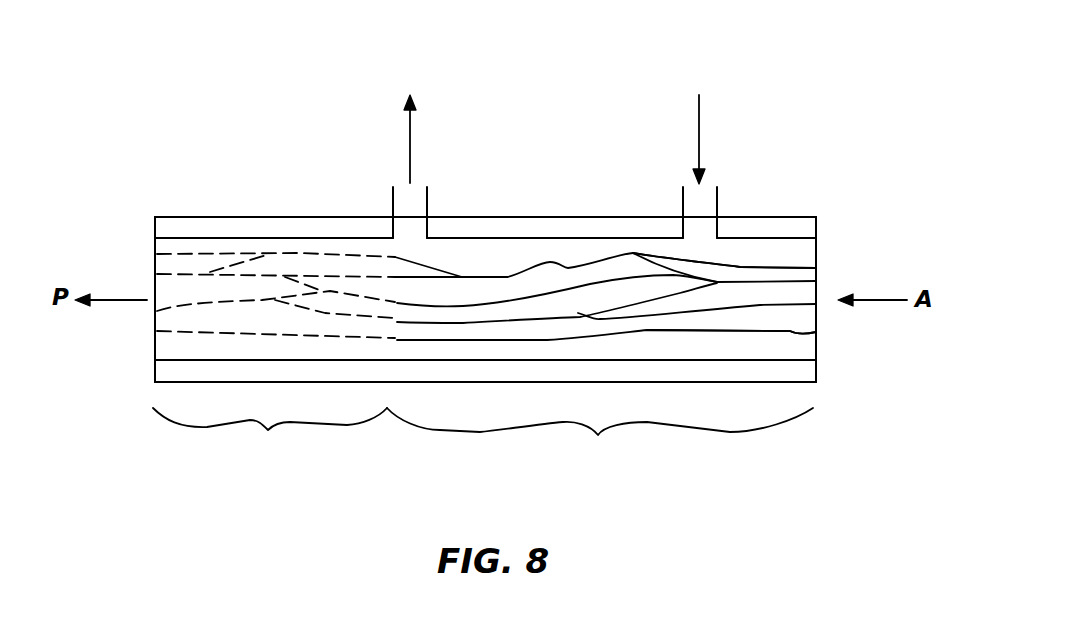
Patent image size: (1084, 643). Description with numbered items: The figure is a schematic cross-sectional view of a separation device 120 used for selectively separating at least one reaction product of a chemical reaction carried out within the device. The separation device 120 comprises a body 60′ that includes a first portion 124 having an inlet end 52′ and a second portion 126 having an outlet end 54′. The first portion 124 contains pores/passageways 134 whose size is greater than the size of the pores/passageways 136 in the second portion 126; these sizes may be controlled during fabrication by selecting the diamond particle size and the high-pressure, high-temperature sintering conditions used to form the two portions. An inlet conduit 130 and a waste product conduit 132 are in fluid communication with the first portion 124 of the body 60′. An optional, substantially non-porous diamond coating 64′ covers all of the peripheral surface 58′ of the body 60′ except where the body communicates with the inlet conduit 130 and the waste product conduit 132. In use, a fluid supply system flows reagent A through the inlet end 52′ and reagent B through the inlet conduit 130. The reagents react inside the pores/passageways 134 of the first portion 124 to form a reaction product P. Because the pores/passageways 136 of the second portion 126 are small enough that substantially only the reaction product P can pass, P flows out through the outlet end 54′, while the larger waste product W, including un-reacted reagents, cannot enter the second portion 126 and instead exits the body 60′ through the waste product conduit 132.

The separation device 120 is at (863, 116).
The waste product conduit 132 is at (427, 197).
The inlet conduit 130 is at (717, 193).
The body 60′ is at (517, 277).
The diamond coating 64′ is at (250, 227).
The outlet end 54′ is at (155, 243).
The peripheral surface 58′ is at (787, 238).
The inlet end 52′ is at (816, 267).
The pores/passageways 134 is at (800, 333).
The pores/passageways 136 is at (190, 307).
The second portion 126 is at (270, 432).
The first portion 124 is at (600, 434).